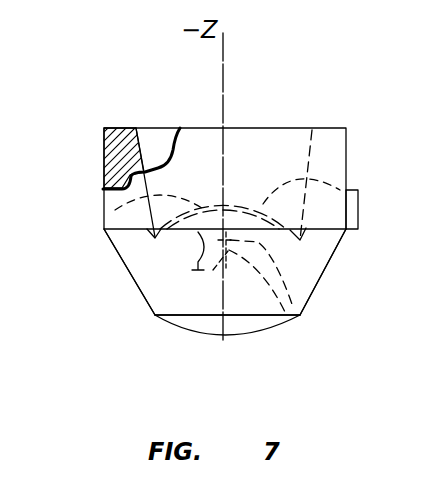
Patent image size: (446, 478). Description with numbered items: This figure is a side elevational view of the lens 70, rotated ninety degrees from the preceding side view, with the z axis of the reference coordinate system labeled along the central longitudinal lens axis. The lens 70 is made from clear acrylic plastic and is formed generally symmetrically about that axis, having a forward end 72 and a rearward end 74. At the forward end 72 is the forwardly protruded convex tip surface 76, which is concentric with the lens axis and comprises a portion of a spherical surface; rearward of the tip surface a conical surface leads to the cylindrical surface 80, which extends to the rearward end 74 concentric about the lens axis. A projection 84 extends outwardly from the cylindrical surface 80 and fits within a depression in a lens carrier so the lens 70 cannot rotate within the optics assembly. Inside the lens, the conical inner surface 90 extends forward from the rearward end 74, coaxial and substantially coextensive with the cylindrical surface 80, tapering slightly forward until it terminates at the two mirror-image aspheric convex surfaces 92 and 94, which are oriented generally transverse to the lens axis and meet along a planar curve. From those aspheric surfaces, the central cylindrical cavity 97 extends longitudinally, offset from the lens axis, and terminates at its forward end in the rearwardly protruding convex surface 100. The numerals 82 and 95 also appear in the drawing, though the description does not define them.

The lens 70 is at (116, 336).
The forward end 72 is at (292, 336).
The rearward end 74 is at (262, 128).
The tip surface 76 is at (207, 335).
The cylindrical surface 80 is at (107, 178).
The side wall 82 is at (143, 296).
The projection 84 is at (352, 208).
The conical inner surface 90 is at (141, 150).
The aspheric convex surface 92 is at (104, 211).
The aspheric convex surface 94 is at (352, 183).
The filament 95 is at (193, 258).
The central cylindrical cavity 97 is at (330, 258).
The convex surface 100 is at (298, 315).